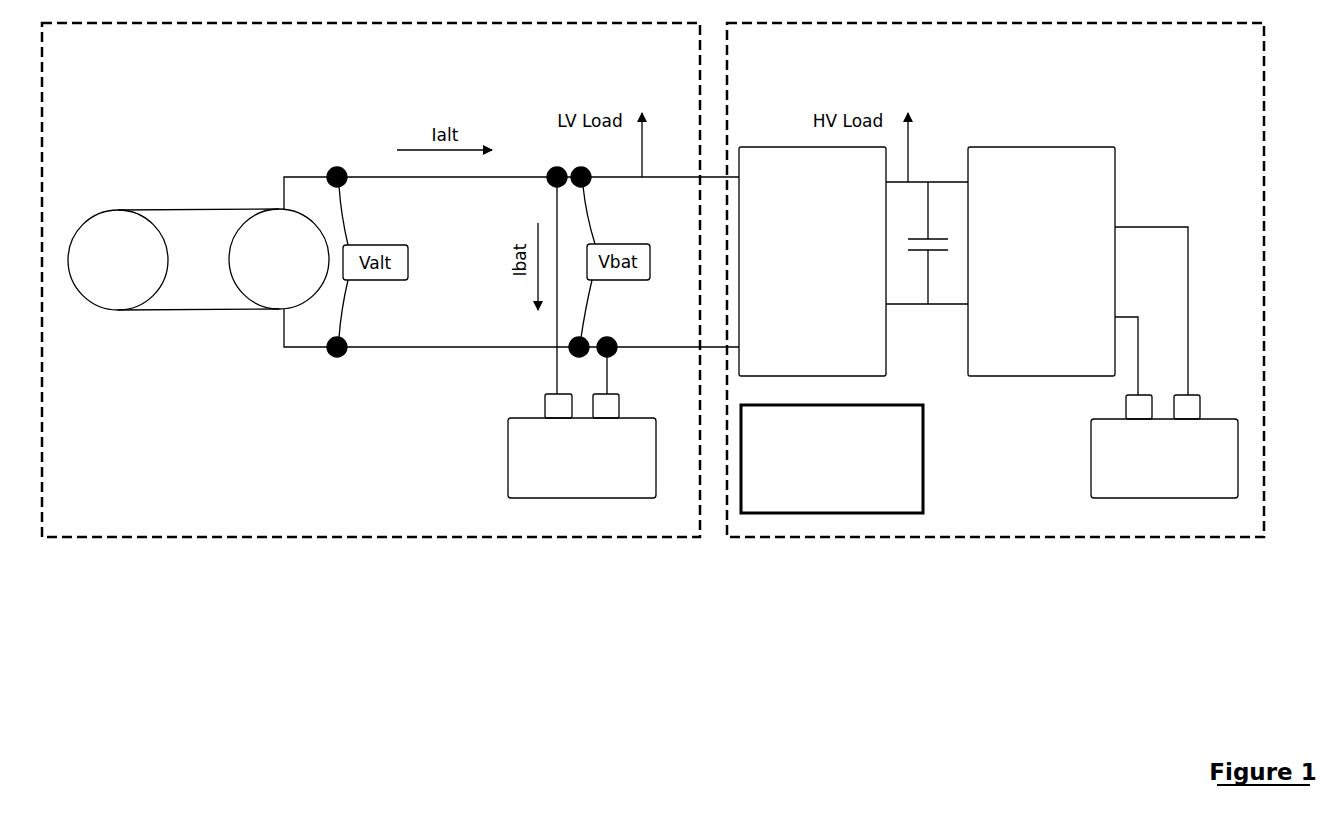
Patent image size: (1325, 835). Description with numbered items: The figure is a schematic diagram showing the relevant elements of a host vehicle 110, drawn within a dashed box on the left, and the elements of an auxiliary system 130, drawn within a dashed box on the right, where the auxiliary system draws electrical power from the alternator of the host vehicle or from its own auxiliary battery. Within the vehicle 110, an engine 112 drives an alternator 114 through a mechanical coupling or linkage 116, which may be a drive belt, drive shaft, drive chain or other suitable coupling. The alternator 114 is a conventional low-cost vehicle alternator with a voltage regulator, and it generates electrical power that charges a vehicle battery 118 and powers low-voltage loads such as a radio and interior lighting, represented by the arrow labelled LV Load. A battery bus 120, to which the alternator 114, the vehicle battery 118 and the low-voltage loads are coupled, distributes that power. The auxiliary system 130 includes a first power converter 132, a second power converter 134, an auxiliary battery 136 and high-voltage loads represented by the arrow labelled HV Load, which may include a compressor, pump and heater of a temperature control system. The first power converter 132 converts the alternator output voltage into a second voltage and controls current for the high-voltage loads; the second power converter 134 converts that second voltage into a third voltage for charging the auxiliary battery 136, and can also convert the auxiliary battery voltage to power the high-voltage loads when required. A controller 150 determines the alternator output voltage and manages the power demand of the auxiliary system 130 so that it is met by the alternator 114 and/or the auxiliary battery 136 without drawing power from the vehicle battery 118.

The host vehicle 110 is at (83, 53).
The engine 112 is at (101, 271).
The alternator 114 is at (262, 270).
The mechanical coupling or linkage 116 is at (222, 310).
The vehicle battery 118 is at (564, 471).
The battery bus 120 is at (425, 178).
The auxiliary system 130 is at (770, 53).
The first power converter 132 is at (795, 274).
The second power converter 134 is at (1023, 274).
The auxiliary battery 136 is at (1150, 471).
The controller 150 is at (815, 487).